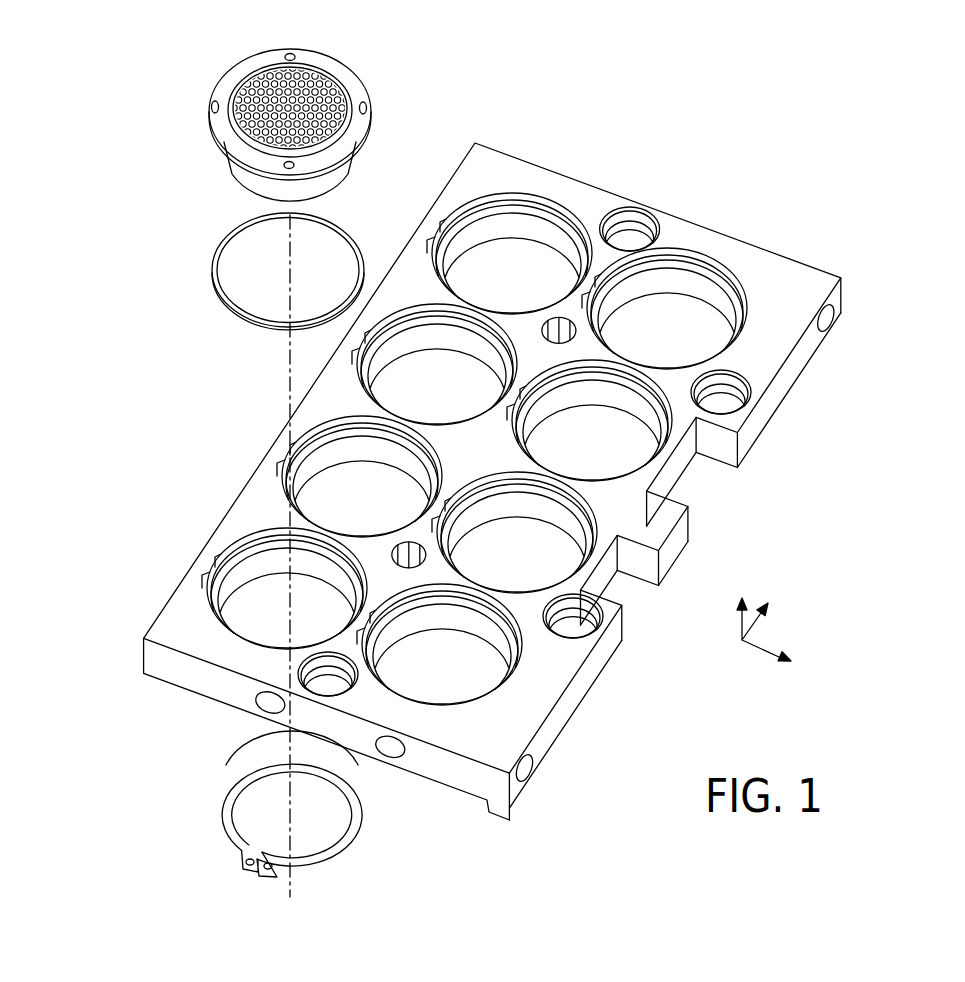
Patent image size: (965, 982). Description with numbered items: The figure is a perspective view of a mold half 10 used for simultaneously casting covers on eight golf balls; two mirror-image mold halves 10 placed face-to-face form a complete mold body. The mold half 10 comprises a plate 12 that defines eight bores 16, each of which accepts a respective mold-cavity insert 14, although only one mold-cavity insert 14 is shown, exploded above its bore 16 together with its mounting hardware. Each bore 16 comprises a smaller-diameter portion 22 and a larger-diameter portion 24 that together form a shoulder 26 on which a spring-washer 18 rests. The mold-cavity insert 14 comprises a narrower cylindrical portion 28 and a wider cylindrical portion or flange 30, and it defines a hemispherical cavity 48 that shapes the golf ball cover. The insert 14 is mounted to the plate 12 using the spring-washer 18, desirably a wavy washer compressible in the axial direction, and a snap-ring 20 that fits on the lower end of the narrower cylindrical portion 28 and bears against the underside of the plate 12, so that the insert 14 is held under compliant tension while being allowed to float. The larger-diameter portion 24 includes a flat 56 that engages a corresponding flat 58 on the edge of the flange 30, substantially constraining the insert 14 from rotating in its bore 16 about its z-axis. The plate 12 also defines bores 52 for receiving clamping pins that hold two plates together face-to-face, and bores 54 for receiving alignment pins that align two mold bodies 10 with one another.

The mold half 10 is at (880, 217).
The plate 12 is at (768, 243).
The mold-cavity insert 14 is at (198, 117).
The bore 16 is at (522, 288).
The spring-washer 18 is at (212, 286).
The snap-ring 20 is at (353, 837).
The smaller-diameter portion 22 is at (528, 231).
The larger-diameter portion 24 is at (495, 199).
The shoulder 26 is at (562, 218).
The narrower cylindrical portion 28 is at (347, 180).
The flange 30 is at (368, 95).
The hemispherical cavity 48 is at (313, 85).
The bore for clamping pin 52 is at (832, 318).
The bore for alignment pin 54 is at (640, 232).
The flat 56 is at (220, 568).
The flat 58 is at (218, 88).